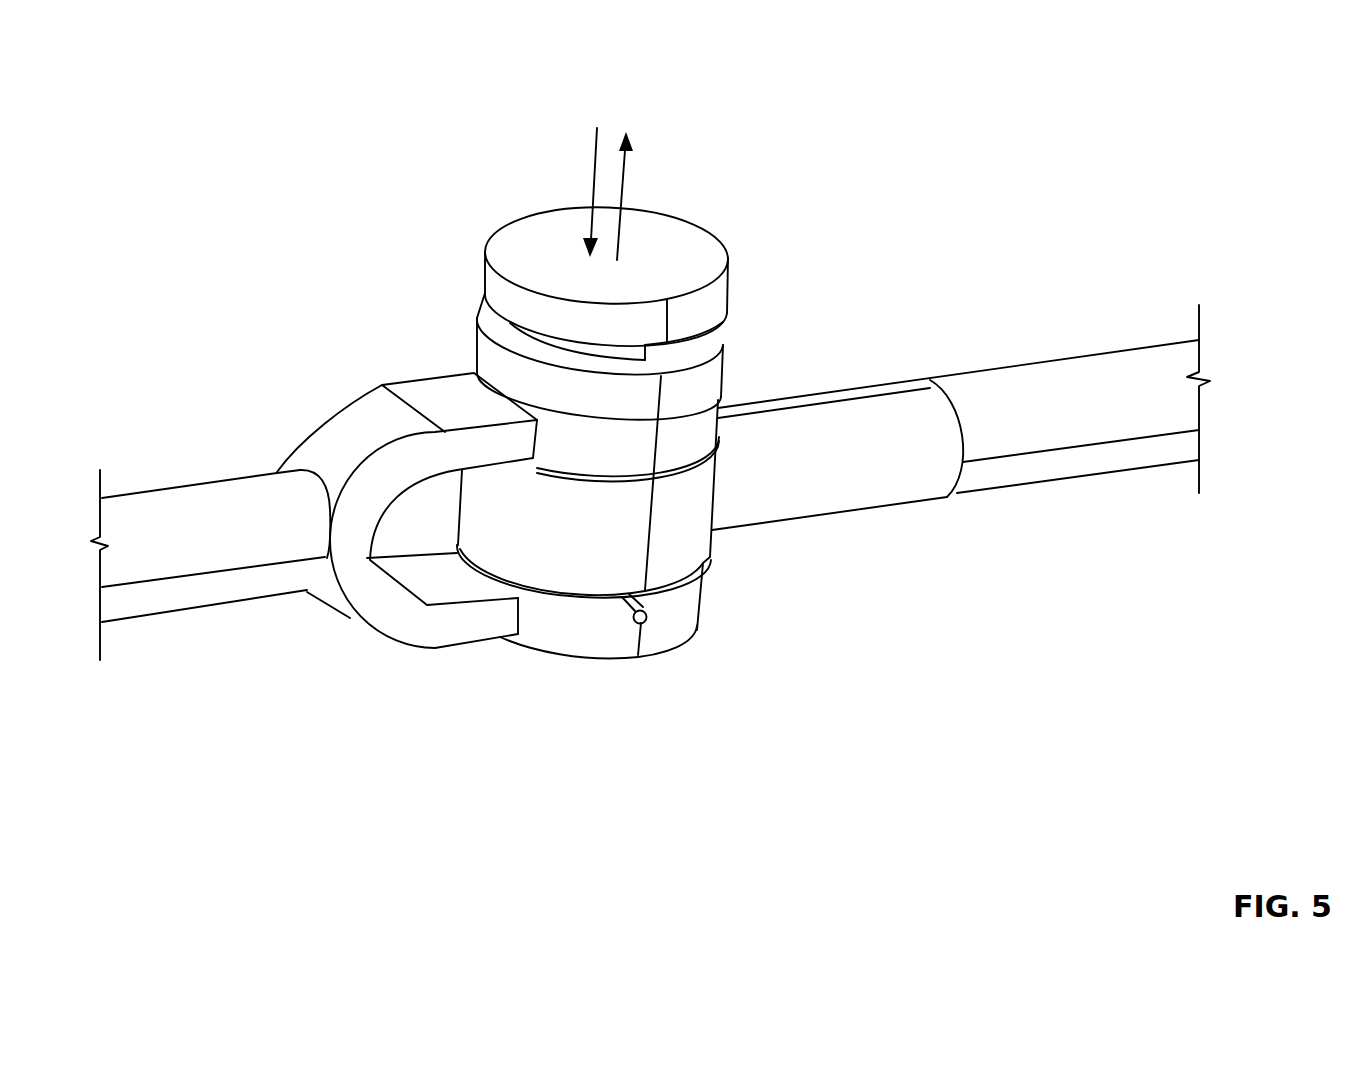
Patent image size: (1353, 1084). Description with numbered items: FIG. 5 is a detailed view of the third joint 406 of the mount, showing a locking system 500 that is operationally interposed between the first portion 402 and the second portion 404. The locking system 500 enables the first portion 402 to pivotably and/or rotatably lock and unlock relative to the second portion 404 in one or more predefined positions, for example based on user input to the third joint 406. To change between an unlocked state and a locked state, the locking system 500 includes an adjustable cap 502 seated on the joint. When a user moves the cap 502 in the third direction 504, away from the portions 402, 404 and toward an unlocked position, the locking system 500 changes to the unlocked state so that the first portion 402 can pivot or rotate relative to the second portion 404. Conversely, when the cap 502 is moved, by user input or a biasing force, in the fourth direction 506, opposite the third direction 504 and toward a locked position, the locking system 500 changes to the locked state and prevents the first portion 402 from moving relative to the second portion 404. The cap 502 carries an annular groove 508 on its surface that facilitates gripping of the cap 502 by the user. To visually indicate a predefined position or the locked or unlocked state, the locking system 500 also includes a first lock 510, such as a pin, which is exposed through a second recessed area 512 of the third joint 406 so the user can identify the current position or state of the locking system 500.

The locking system 500 is at (376, 124).
The first portion 402 is at (220, 480).
The second portion 404 is at (1107, 348).
The third joint 406 is at (752, 327).
The adjustable cap 502 is at (508, 238).
The third direction 504 is at (622, 192).
The fourth direction 506 is at (592, 186).
The groove 508 is at (490, 322).
The first lock 510 is at (646, 622).
The second recessed area 512 is at (602, 630).